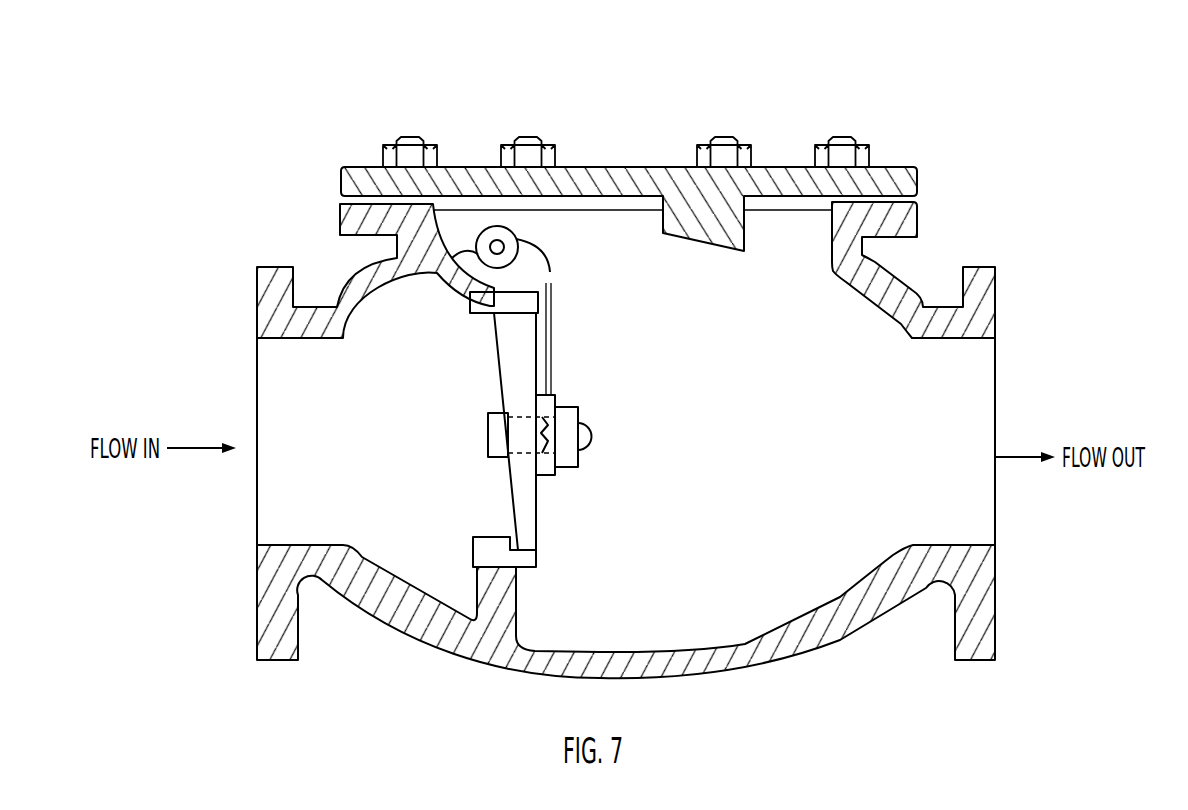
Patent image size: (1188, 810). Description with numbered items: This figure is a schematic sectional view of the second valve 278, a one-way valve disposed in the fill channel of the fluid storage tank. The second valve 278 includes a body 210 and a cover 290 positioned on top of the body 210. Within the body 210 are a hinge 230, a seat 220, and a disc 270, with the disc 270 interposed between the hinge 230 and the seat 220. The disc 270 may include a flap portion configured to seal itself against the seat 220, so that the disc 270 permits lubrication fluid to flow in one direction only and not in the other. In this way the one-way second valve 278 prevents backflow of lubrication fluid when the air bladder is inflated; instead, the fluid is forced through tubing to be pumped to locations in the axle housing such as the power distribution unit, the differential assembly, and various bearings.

The second valve 278 is at (583, 134).
The cover 290 is at (313, 177).
The body 210 is at (223, 310).
The hinge 230 is at (530, 267).
The disc 270 is at (560, 512).
The seat 220 is at (553, 560).